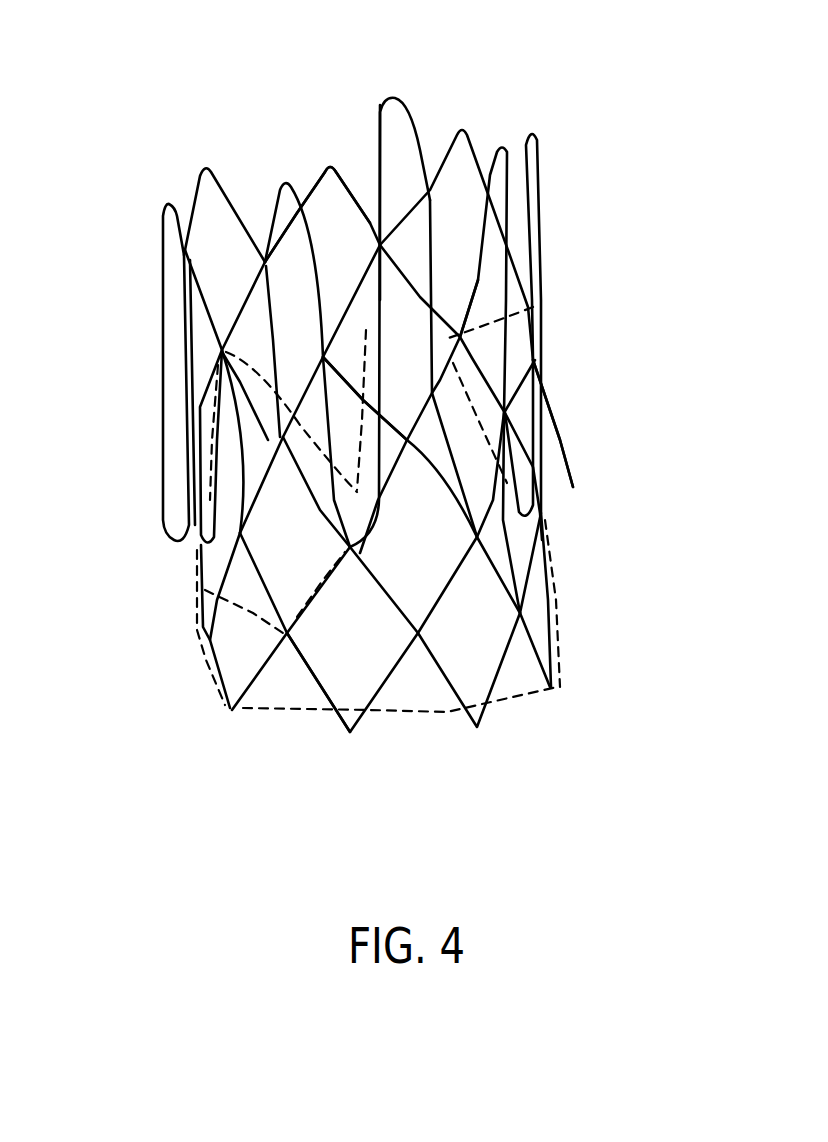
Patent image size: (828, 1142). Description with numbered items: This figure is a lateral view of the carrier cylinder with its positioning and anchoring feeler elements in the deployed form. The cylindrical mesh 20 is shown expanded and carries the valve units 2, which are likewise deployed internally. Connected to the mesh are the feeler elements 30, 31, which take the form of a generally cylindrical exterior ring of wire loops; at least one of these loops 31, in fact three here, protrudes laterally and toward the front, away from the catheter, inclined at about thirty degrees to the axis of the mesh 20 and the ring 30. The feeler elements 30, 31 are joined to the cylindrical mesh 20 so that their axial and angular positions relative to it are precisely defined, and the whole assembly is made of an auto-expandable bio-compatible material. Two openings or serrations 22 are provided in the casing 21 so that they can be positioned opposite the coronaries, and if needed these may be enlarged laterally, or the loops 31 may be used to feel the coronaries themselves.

The valve units 2 is at (480, 660).
The cylindrical mesh 20 is at (323, 690).
The casing 21 is at (330, 210).
The openings or serrations 22 is at (347, 425).
The feeler element ring 30 is at (413, 108).
The protruding loops 31 is at (567, 452).